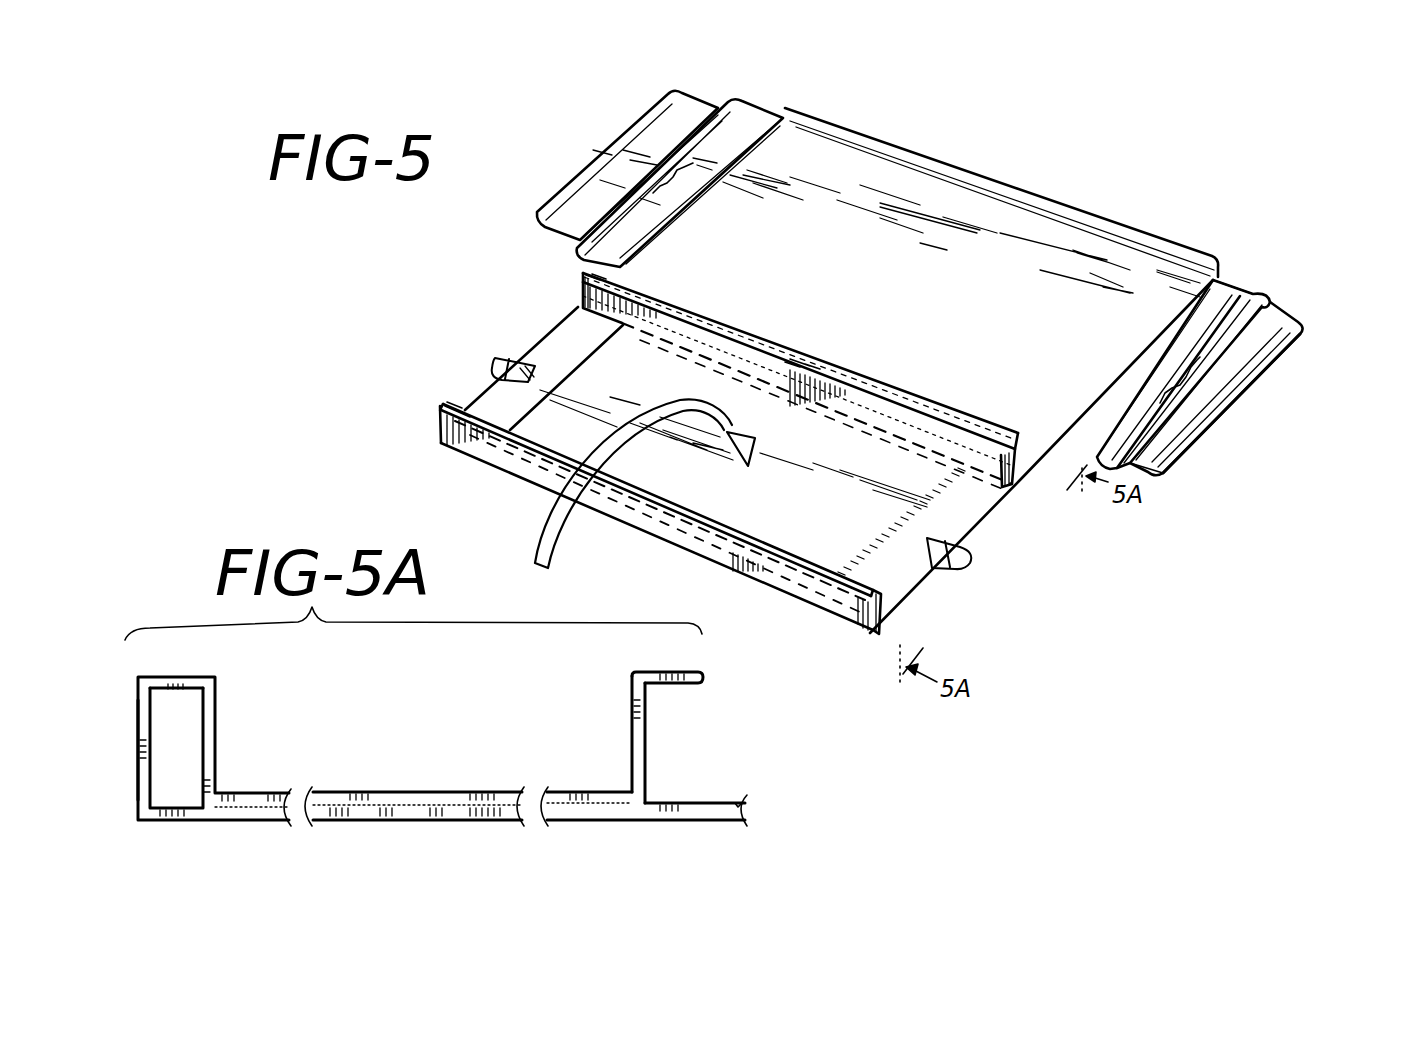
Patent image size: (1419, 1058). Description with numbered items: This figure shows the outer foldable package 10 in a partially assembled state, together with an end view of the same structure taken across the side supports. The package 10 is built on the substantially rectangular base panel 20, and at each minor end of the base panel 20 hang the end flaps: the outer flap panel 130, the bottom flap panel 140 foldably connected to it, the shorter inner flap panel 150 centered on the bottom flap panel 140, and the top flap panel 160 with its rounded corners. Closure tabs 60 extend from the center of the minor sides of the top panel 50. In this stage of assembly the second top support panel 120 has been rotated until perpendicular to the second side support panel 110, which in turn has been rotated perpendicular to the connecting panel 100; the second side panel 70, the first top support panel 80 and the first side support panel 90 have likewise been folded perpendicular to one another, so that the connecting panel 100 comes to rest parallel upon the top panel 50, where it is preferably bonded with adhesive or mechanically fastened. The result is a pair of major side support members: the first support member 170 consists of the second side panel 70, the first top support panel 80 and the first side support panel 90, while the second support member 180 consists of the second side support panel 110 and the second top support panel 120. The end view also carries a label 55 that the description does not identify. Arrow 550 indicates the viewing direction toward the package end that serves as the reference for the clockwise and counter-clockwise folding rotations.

In FIG. 5, the outer foldable package 10 is at (1117, 133).
In FIG. 5, the base panel 20 is at (932, 327).
In FIG. 5A, the top panel 50 is at (363, 811).
In FIG. 5A, the bottom surface of base sheet 55 is at (482, 817).
In FIG. 5, the closure tabs 60 is at (507, 362).
In FIG. 5A, the second side panel 70 is at (136, 735).
In FIG. 5A, the first top support panel 80 is at (174, 677).
In FIG. 5A, the first side support panel 90 is at (218, 757).
In FIG. 5A, the connecting panel 100 is at (420, 790).
In FIG. 5A, the second side support panel 110 is at (647, 738).
In FIG. 5A, the second top support panel 120 is at (688, 672).
In FIG. 5, the outer flap panel 130 is at (1238, 294).
In FIG. 5, the bottom flap panel 140 is at (1270, 300).
In FIG. 5, the inner flap panel 150 is at (1290, 322).
In FIG. 5, the top flap panel 160 is at (1298, 348).
In FIG. 5, the major side support member 170 is at (879, 641).
In FIG. 5A, the major side support member 170 is at (129, 815).
In FIG. 5, the second major side support member 180 is at (1022, 480).
In FIG. 5A, the second major side support member 180 is at (675, 725).
In FIG. 5, the arrow 550 is at (1274, 466).